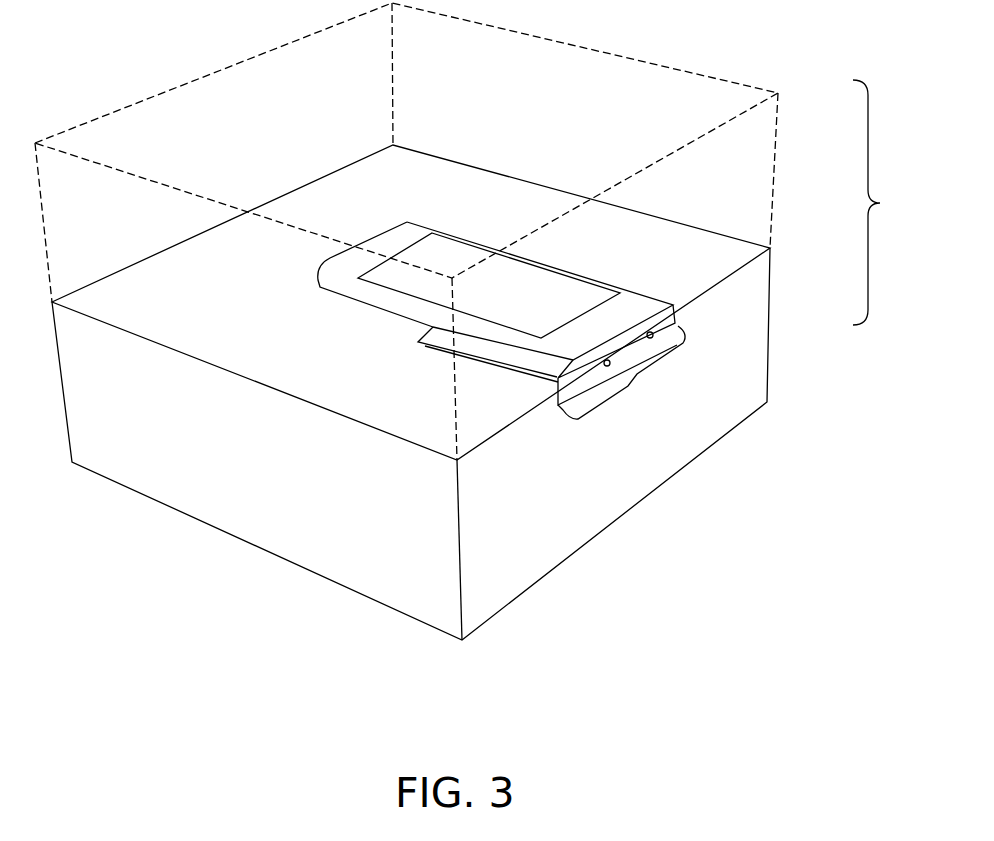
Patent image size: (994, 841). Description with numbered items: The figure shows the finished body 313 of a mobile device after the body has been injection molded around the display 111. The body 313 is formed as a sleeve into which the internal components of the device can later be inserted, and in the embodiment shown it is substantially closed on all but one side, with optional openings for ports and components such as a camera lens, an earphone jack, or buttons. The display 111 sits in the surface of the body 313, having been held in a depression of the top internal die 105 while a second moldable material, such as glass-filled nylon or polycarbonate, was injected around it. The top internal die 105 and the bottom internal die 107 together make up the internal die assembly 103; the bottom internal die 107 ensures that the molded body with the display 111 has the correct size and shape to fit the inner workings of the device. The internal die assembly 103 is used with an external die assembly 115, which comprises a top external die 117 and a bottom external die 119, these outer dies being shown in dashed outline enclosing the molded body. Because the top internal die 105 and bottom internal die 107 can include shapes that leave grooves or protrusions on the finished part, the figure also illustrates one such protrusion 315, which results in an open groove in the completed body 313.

The internal die assembly 103 is at (630, 385).
The top internal die 105 is at (562, 361).
The bottom internal die 107 is at (572, 387).
The display 111 is at (542, 280).
The external die assembly 115 is at (891, 202).
The top external die 117 is at (750, 324).
The bottom external die 119 is at (733, 104).
The body 313 is at (345, 273).
The protrusion 315 is at (497, 360).